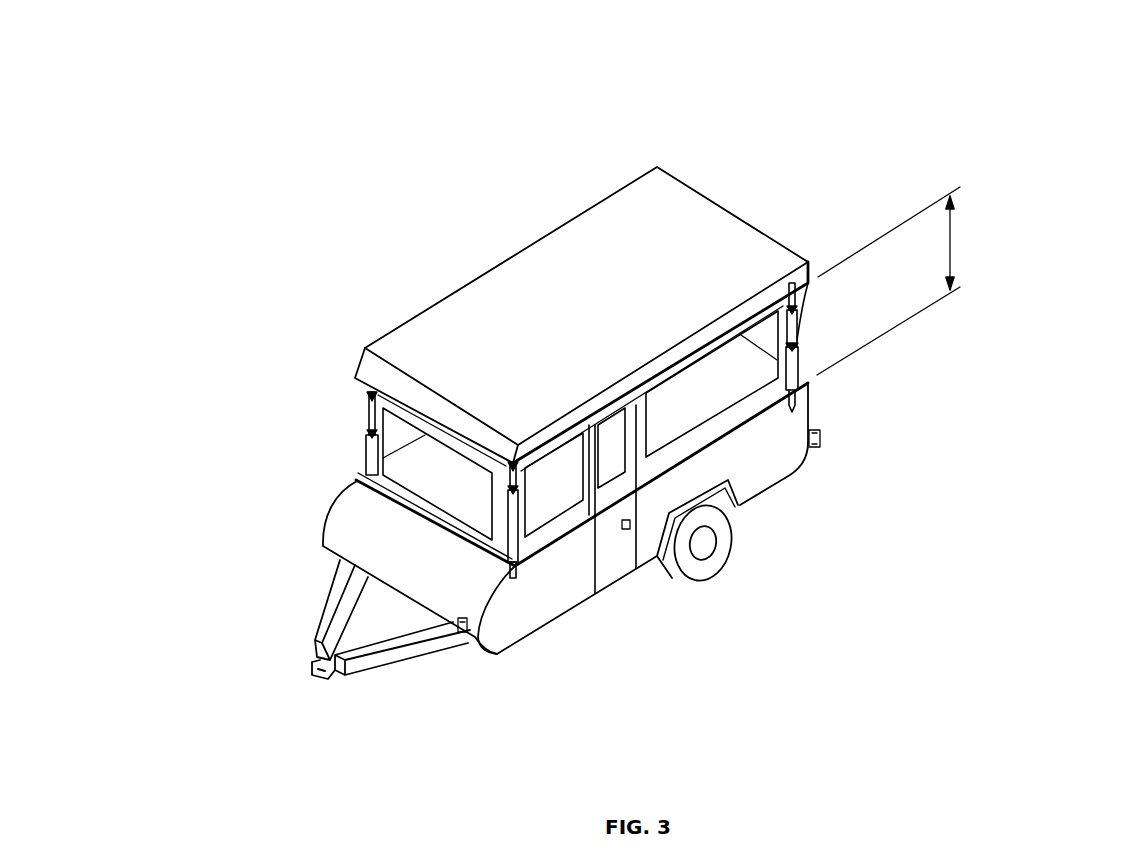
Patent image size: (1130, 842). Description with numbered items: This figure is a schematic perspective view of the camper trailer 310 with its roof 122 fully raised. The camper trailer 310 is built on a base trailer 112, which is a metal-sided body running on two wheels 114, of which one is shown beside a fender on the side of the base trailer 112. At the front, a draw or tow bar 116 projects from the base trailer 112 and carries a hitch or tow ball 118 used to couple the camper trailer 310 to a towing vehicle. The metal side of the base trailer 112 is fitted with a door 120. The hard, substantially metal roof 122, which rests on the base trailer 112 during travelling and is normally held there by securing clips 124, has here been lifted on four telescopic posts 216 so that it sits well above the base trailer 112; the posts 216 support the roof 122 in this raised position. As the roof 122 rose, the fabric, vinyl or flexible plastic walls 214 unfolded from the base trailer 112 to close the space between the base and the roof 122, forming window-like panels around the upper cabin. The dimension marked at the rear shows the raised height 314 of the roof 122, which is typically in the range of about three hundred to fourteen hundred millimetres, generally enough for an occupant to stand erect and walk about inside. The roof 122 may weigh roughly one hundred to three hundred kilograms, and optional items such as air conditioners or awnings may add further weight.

The base trailer 112 is at (763, 452).
The wheels 114 is at (715, 575).
The tow bar 116 is at (322, 623).
The hitch or tow ball 118 is at (310, 668).
The door 120 is at (605, 560).
The roof 122 is at (697, 247).
The securing clips 124 is at (790, 283).
The walls 214 is at (440, 465).
The telescopic posts 216 is at (365, 450).
The camper trailer 310 is at (933, 635).
The raised height 314 is at (907, 281).